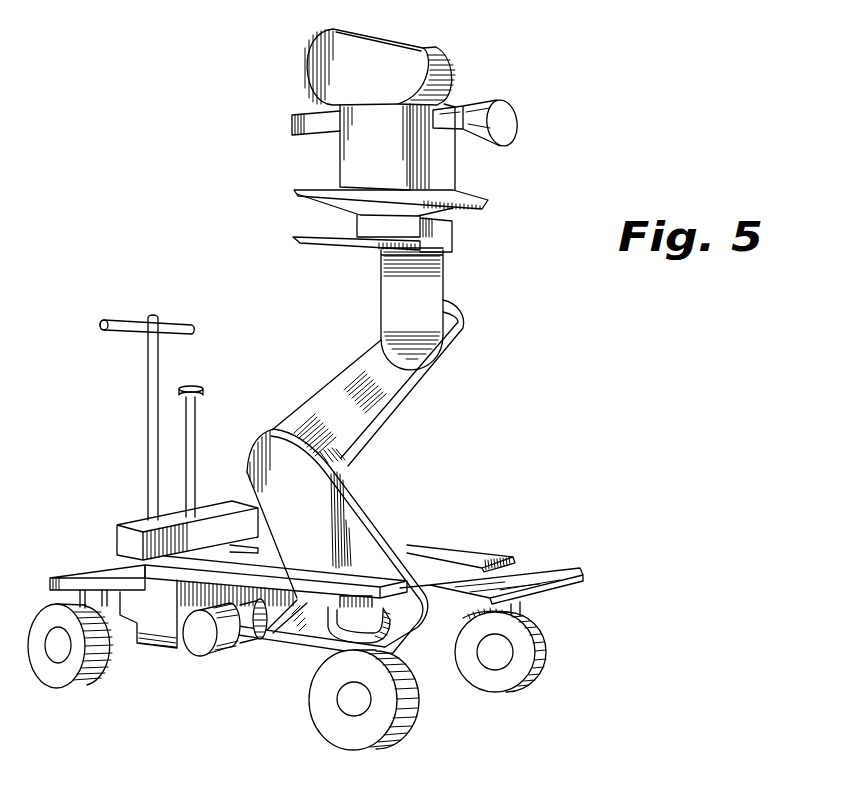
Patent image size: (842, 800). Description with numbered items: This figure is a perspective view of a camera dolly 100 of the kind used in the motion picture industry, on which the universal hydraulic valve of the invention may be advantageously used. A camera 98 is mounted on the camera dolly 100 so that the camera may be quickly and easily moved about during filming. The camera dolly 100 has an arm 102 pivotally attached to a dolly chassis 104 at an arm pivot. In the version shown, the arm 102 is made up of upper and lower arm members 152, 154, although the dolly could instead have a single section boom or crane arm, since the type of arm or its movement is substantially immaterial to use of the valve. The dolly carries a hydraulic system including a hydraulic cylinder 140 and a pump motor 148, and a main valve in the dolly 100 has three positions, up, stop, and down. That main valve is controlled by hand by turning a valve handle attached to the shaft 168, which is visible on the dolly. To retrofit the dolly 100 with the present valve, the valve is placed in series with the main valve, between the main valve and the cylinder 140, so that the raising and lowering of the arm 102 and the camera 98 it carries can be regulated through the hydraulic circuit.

The camera 98 is at (442, 157).
The camera dolly 100 is at (118, 490).
The arm 102 is at (362, 537).
The dolly chassis 104 is at (297, 653).
The hydraulic cylinder 140 is at (270, 632).
The pump motor 148 is at (195, 640).
The upper arm member 152 is at (407, 380).
The lower arm member 154 is at (353, 468).
The shaft 168 is at (197, 415).